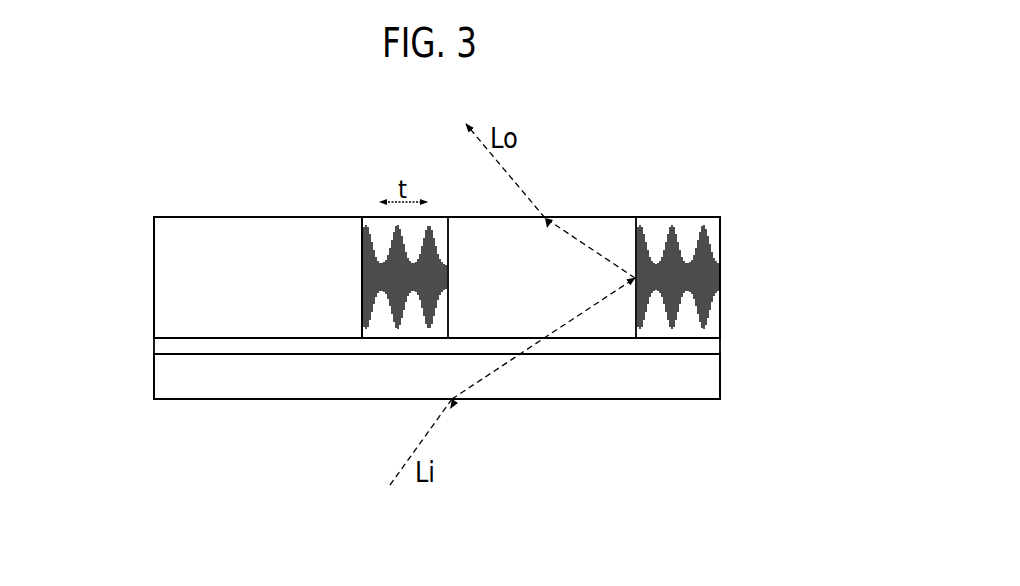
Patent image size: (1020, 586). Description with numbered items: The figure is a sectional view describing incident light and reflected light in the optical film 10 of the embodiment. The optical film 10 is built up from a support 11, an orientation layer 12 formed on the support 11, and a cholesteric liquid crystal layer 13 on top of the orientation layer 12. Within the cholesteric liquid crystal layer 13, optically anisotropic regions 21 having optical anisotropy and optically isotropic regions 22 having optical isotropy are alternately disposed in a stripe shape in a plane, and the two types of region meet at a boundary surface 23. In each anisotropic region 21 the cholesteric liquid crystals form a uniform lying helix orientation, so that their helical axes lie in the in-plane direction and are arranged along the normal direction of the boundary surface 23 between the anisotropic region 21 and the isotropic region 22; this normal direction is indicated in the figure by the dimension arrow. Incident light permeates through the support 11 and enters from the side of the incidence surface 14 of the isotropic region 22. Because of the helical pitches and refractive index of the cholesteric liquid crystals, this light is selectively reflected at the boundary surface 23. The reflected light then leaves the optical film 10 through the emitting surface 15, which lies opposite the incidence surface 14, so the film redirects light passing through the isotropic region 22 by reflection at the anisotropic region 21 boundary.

The optical film 10 is at (744, 165).
The support 11 is at (154, 375).
The orientation layer 12 is at (154, 344).
The cholesteric liquid crystal layer 13 is at (154, 277).
The incidence surface 14 is at (272, 399).
The emitting surface 15 is at (213, 217).
The optically anisotropic region 21 is at (437, 225).
The optically isotropic region 22 is at (290, 232).
The boundary surface 23 is at (362, 241).